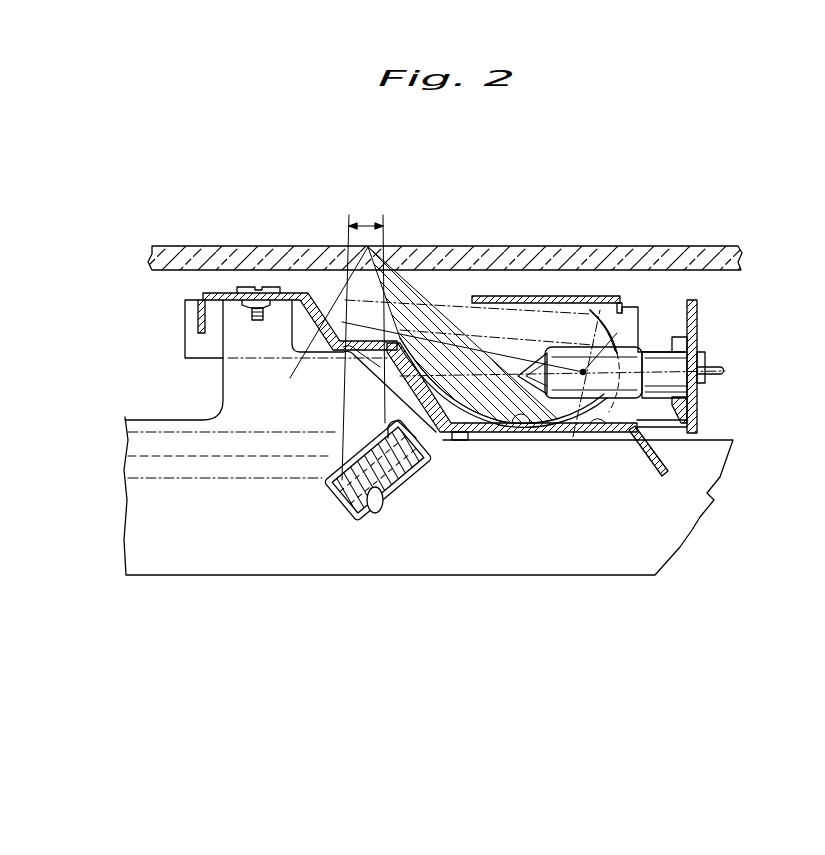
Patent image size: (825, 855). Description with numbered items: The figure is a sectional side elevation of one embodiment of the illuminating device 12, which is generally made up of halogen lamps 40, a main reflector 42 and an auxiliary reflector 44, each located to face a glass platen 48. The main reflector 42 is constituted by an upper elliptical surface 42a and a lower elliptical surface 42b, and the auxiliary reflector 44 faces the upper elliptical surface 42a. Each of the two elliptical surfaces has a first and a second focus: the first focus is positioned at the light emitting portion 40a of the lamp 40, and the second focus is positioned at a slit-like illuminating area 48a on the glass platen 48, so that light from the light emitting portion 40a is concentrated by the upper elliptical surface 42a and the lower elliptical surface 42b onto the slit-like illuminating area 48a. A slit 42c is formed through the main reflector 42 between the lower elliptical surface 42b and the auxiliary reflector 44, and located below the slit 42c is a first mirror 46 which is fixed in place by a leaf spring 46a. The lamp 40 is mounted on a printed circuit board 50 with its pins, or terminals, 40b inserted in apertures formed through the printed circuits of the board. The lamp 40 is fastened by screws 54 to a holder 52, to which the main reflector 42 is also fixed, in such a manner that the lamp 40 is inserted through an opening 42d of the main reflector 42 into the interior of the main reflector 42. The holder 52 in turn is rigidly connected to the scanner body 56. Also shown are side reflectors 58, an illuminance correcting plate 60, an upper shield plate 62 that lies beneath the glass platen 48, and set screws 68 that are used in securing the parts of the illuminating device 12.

The illuminating device 12 is at (661, 201).
The lamp 40 is at (631, 380).
The light emitting portion 40a is at (583, 376).
The pin 40b is at (724, 370).
The main reflector 42 is at (471, 434).
The upper elliptical surface 42a is at (613, 328).
The lower elliptical surface 42b is at (539, 425).
The slit 42c is at (343, 353).
The opening 42d is at (600, 428).
The auxiliary reflector 44 is at (291, 348).
The first mirror 46 is at (339, 480).
The leaf spring 46a is at (378, 511).
The glass platen 48 is at (724, 247).
The slit-like illuminating area 48a is at (373, 224).
The printed circuit board 50 is at (698, 327).
The holder 52 is at (690, 410).
The screw 54 is at (706, 357).
The scanner body 56 is at (708, 502).
The side reflector 58 is at (189, 309).
The illuminance correcting plate 60 is at (213, 293).
The upper shield plate 62 is at (531, 297).
The set screw 68 is at (251, 305).